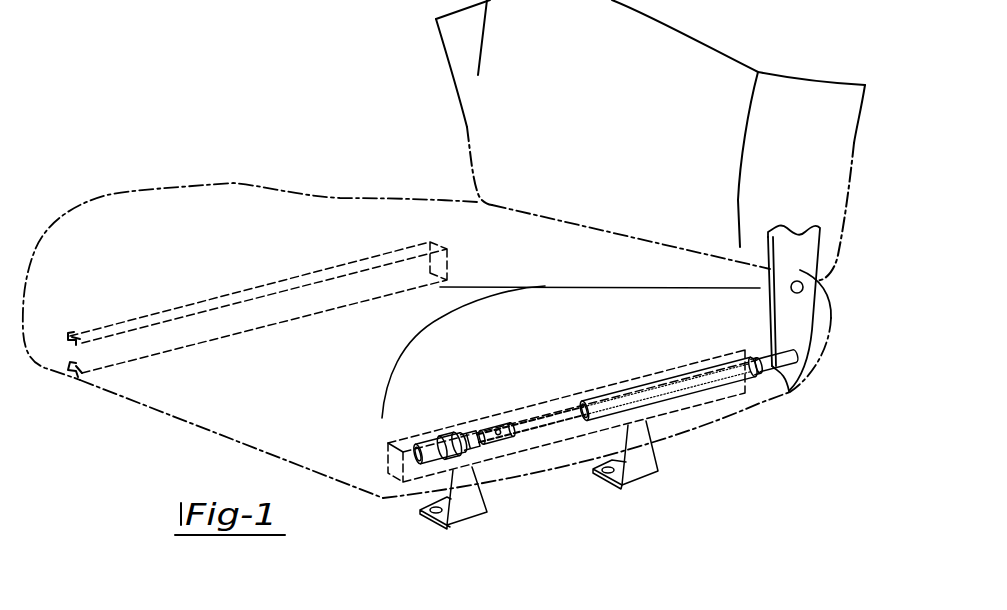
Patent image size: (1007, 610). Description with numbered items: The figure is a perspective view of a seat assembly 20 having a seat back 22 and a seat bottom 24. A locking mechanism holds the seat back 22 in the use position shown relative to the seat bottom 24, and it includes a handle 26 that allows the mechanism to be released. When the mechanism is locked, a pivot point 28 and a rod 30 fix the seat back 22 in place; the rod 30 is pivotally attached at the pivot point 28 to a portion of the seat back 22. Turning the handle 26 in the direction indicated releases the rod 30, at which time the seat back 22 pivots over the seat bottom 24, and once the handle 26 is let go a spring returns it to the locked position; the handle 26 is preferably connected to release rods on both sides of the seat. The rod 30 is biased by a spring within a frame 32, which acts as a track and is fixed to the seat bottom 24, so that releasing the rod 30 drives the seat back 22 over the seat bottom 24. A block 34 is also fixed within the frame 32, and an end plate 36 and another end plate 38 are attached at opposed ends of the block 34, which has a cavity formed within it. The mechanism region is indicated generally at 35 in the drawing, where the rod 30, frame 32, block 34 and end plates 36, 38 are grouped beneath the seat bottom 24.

The seat assembly 20 is at (444, 180).
The seat back 22 is at (654, 119).
The seat bottom 24 is at (174, 270).
The handle 26 is at (790, 287).
The pivot point 28 is at (768, 250).
The rod 30 is at (790, 392).
The frame 32 is at (379, 504).
The block 34 is at (722, 390).
The actuator assembly 35 is at (475, 398).
The end plate 36 is at (432, 440).
The end plate 38 is at (493, 420).